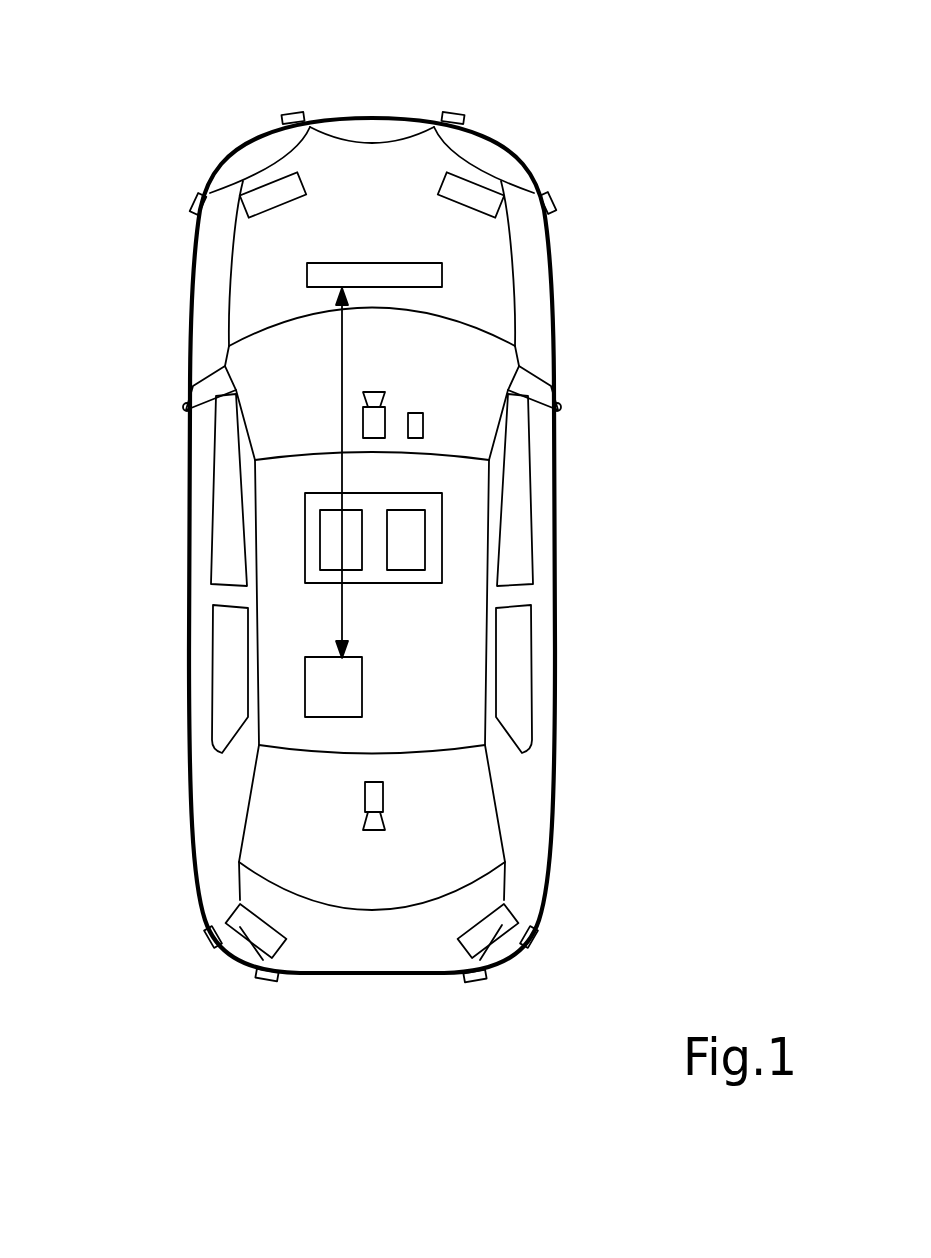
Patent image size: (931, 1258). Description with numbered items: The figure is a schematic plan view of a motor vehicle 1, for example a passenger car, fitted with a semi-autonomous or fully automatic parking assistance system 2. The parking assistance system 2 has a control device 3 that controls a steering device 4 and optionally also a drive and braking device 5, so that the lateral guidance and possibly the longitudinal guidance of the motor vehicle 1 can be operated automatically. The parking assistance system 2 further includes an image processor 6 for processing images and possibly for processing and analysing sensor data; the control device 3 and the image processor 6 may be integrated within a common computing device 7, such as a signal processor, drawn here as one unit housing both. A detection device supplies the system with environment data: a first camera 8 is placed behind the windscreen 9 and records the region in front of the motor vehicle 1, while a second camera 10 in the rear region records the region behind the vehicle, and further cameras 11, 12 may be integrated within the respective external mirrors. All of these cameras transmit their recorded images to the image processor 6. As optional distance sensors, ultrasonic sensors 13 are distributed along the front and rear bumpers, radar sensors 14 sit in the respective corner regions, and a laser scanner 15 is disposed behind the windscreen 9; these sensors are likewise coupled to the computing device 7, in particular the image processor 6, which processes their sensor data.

The motor vehicle 1 is at (552, 588).
The parking assistance system 2 is at (228, 572).
The control device 3 is at (330, 522).
The steering device 4 is at (380, 272).
The drive and braking device 5 is at (353, 702).
The image processor 6 is at (417, 553).
The computing device 7 is at (307, 560).
The first camera 8 is at (367, 430).
The windscreen 9 is at (500, 356).
The second camera 10 is at (378, 805).
The camera 11 is at (184, 407).
The camera 12 is at (565, 406).
The ultrasonic sensors 13 is at (290, 112).
The radar sensors 14 is at (265, 192).
The laser scanner 15 is at (417, 416).